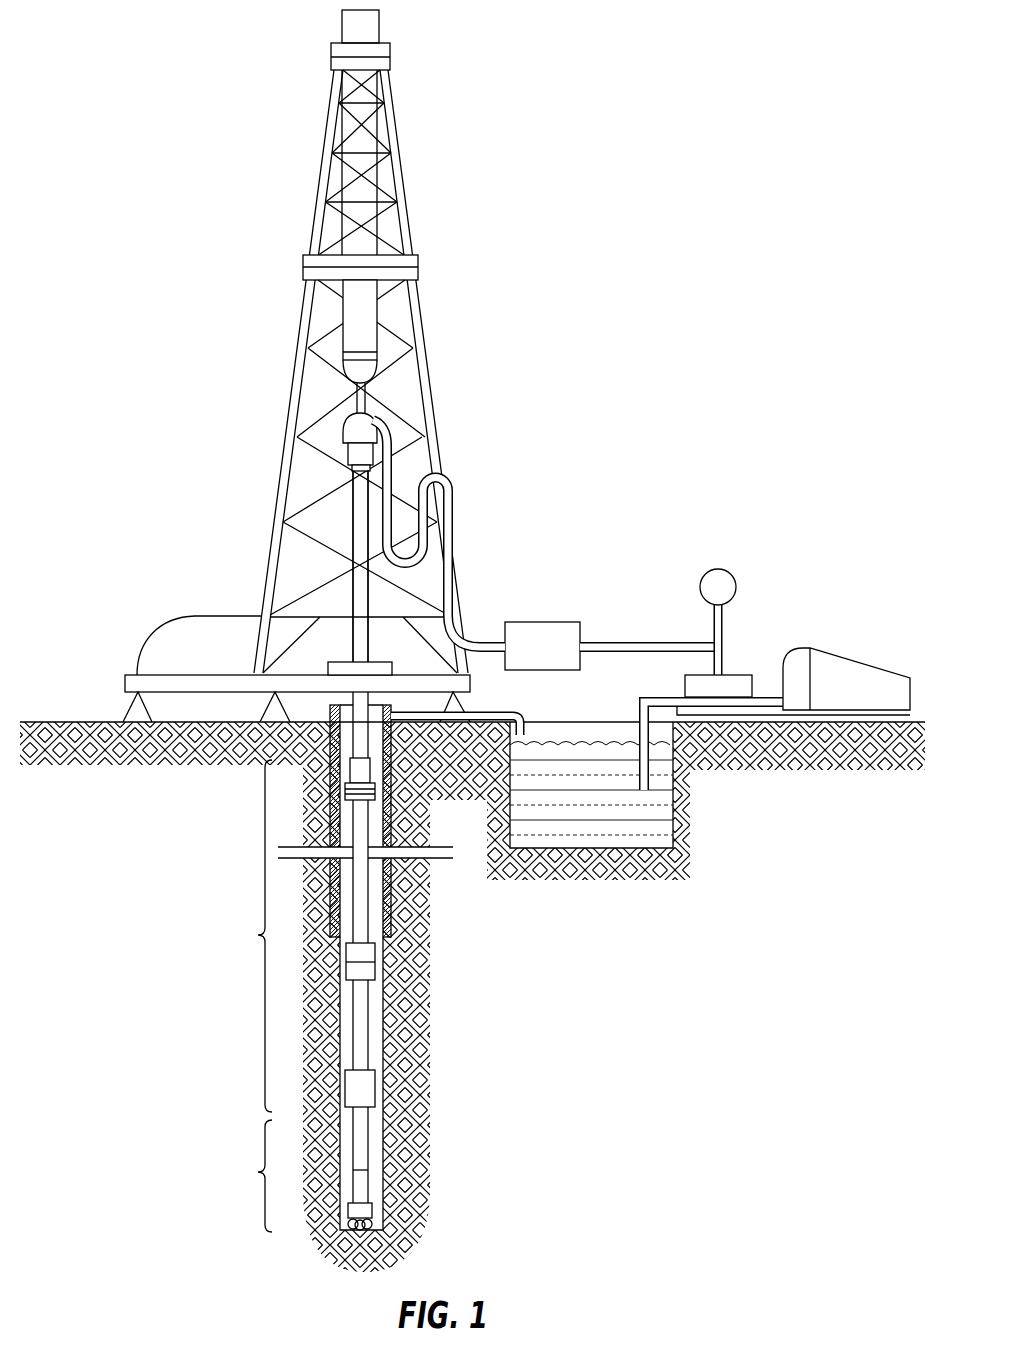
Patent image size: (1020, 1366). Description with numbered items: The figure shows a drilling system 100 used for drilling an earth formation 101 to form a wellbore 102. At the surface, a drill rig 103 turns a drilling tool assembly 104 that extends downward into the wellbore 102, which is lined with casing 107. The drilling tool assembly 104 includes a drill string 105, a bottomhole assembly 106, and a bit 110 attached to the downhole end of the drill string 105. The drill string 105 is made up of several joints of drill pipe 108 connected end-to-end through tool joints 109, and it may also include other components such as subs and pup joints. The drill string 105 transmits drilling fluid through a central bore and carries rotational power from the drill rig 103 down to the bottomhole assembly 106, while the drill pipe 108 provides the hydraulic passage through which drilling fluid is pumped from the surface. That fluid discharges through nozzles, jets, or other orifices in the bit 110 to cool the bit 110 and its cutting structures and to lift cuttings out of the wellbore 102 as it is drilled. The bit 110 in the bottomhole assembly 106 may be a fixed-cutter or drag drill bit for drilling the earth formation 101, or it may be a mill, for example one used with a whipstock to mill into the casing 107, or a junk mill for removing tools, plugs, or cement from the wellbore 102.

The drilling system 100 is at (522, 46).
The earth formation 101 is at (490, 762).
The wellbore 102 is at (385, 1063).
The drill rig 103 is at (296, 383).
The drilling tool assembly 104 is at (397, 921).
The drill string 105 is at (244, 936).
The bottomhole assembly 106 is at (244, 1176).
The casing 107 is at (390, 893).
The drill pipe 108 is at (368, 1028).
The tool joints 109 is at (370, 975).
The bit 110 is at (372, 1222).